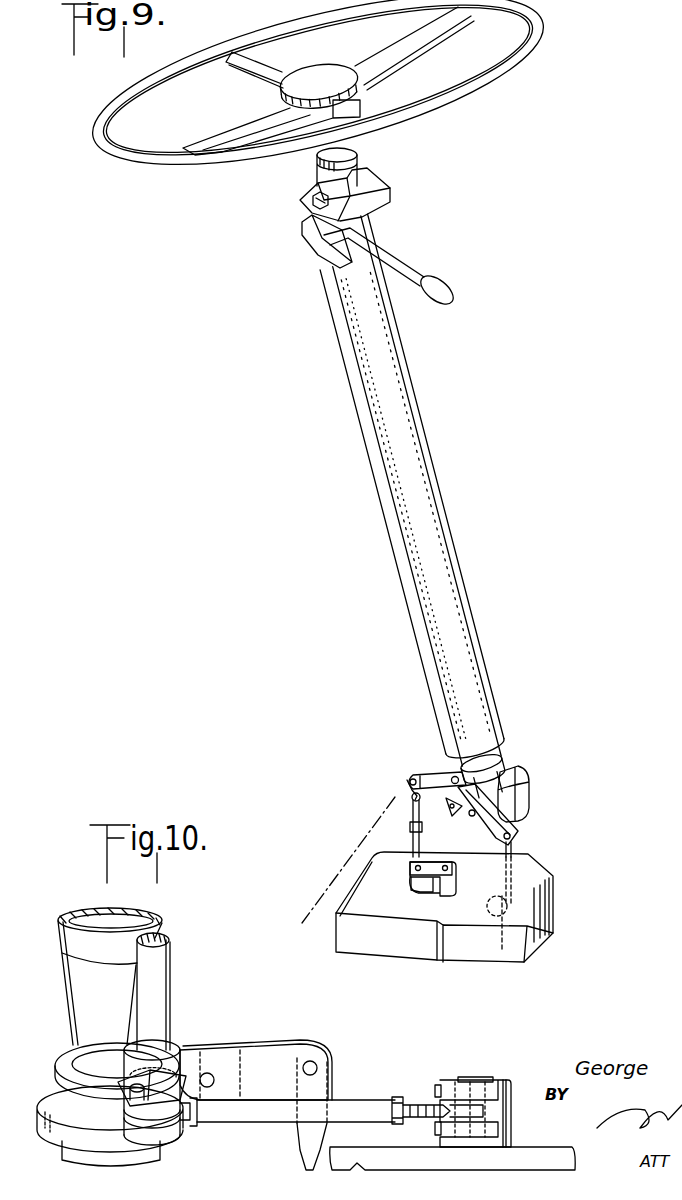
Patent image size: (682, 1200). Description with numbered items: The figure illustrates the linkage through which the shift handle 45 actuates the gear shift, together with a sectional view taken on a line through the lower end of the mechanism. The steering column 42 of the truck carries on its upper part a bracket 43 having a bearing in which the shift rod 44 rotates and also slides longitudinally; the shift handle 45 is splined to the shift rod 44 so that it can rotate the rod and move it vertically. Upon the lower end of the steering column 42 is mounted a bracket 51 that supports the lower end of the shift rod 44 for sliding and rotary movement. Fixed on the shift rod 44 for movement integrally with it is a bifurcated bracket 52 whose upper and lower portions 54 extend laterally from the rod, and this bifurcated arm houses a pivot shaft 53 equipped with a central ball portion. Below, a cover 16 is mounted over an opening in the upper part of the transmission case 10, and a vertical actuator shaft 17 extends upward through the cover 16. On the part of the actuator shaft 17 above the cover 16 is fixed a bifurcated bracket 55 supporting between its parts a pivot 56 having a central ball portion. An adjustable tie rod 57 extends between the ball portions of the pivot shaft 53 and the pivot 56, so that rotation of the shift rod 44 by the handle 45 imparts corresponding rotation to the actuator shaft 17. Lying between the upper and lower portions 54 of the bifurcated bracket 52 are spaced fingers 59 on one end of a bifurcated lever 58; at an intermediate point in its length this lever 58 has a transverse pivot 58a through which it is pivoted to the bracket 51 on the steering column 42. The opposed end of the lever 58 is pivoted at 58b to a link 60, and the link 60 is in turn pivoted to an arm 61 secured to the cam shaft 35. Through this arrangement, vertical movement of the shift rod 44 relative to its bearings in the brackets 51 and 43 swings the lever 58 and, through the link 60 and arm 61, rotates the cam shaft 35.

In FIG. 9, the transmission case 10 is at (307, 909).
In FIG. 9, the cover 16 is at (538, 871).
In FIG. 10, the cover 16 is at (538, 1153).
In FIG. 9, the actuator shaft 17 is at (447, 860).
In FIG. 10, the actuator shaft 17 is at (477, 1077).
In FIG. 9, the cam shaft 35 is at (487, 912).
In FIG. 9, the steering column 42 is at (413, 432).
In FIG. 10, the steering column 42 is at (60, 930).
In FIG. 9, the bracket 43 is at (370, 185).
In FIG. 9, the shift rod 44 is at (398, 557).
In FIG. 10, the shift rod 44 is at (155, 978).
In FIG. 9, the shift handle 45 is at (402, 267).
In FIG. 9, the bracket 51 is at (520, 794).
In FIG. 10, the bracket 51 is at (203, 1152).
In FIG. 9, the bifurcated bracket 52 is at (420, 778).
In FIG. 9, the pivot shaft 53 is at (415, 786).
In FIG. 9, the upper and lower portions 54 is at (452, 782).
In FIG. 10, the upper and lower portions 54 is at (186, 1124).
In FIG. 9, the bifurcated bracket 55 is at (427, 888).
In FIG. 10, the bifurcated bracket 55 is at (482, 1090).
In FIG. 9, the pivot 56 is at (412, 863).
In FIG. 10, the pivot 56 is at (452, 1097).
In FIG. 9, the tie rod 57 is at (410, 837).
In FIG. 10, the tie rod 57 is at (260, 1118).
In FIG. 9, the bifurcated lever 58 is at (520, 812).
In FIG. 10, the bifurcated lever 58 is at (260, 1070).
In FIG. 10, the transverse pivot 58a is at (210, 1073).
In FIG. 10, the pivot 58b is at (316, 1063).
In FIG. 9, the spaced fingers 59 is at (452, 812).
In FIG. 10, the spaced fingers 59 is at (180, 1045).
In FIG. 9, the link 60 is at (517, 848).
In FIG. 10, the link 60 is at (318, 1092).
In FIG. 9, the arm 61 is at (503, 928).